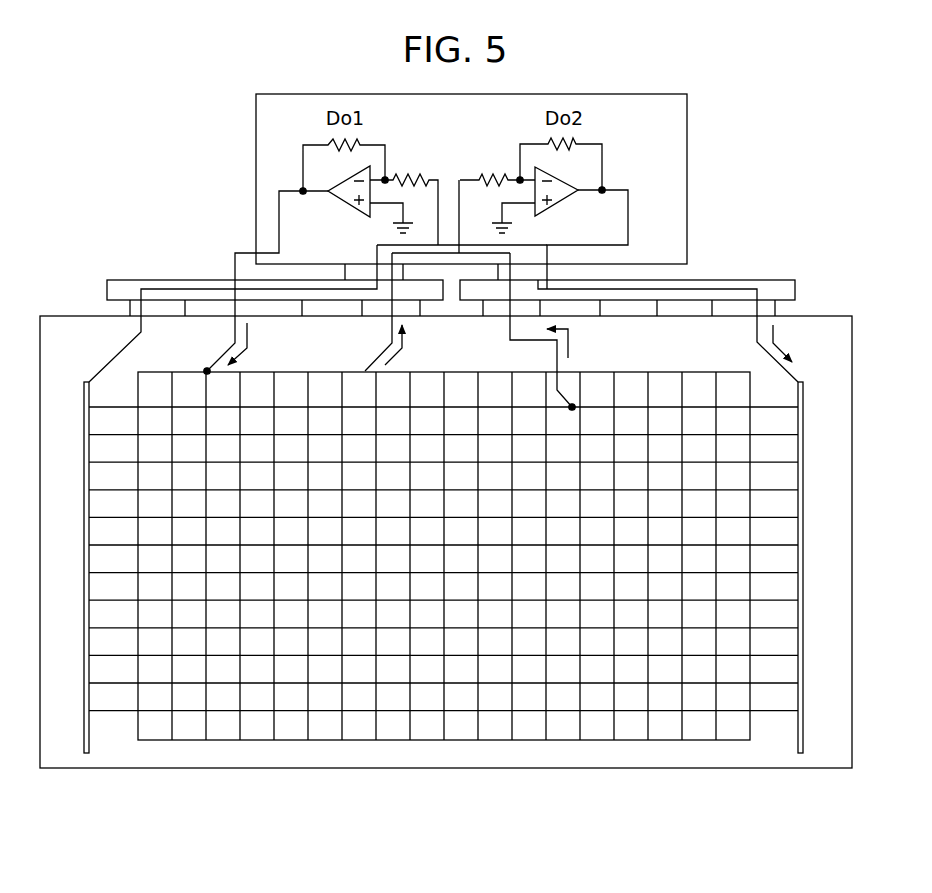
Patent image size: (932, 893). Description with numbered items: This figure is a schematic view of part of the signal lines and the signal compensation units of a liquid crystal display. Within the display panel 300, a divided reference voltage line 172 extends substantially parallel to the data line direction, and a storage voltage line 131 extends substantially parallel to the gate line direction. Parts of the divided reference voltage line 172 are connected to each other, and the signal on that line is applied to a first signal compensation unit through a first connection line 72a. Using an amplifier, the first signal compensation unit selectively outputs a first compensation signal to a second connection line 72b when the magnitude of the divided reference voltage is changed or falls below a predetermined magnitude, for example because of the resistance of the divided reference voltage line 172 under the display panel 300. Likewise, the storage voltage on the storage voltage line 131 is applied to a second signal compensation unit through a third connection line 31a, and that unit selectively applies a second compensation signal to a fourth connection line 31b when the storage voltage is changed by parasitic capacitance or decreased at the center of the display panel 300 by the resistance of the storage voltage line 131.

The second connection line 72b is at (214, 355).
The first connection line 72a is at (378, 357).
The third connection line 31a is at (525, 340).
The fourth connection line 31b is at (757, 305).
The divided reference voltage line 172 is at (750, 393).
The display panel 300 is at (852, 478).
The storage voltage line 131 is at (766, 517).